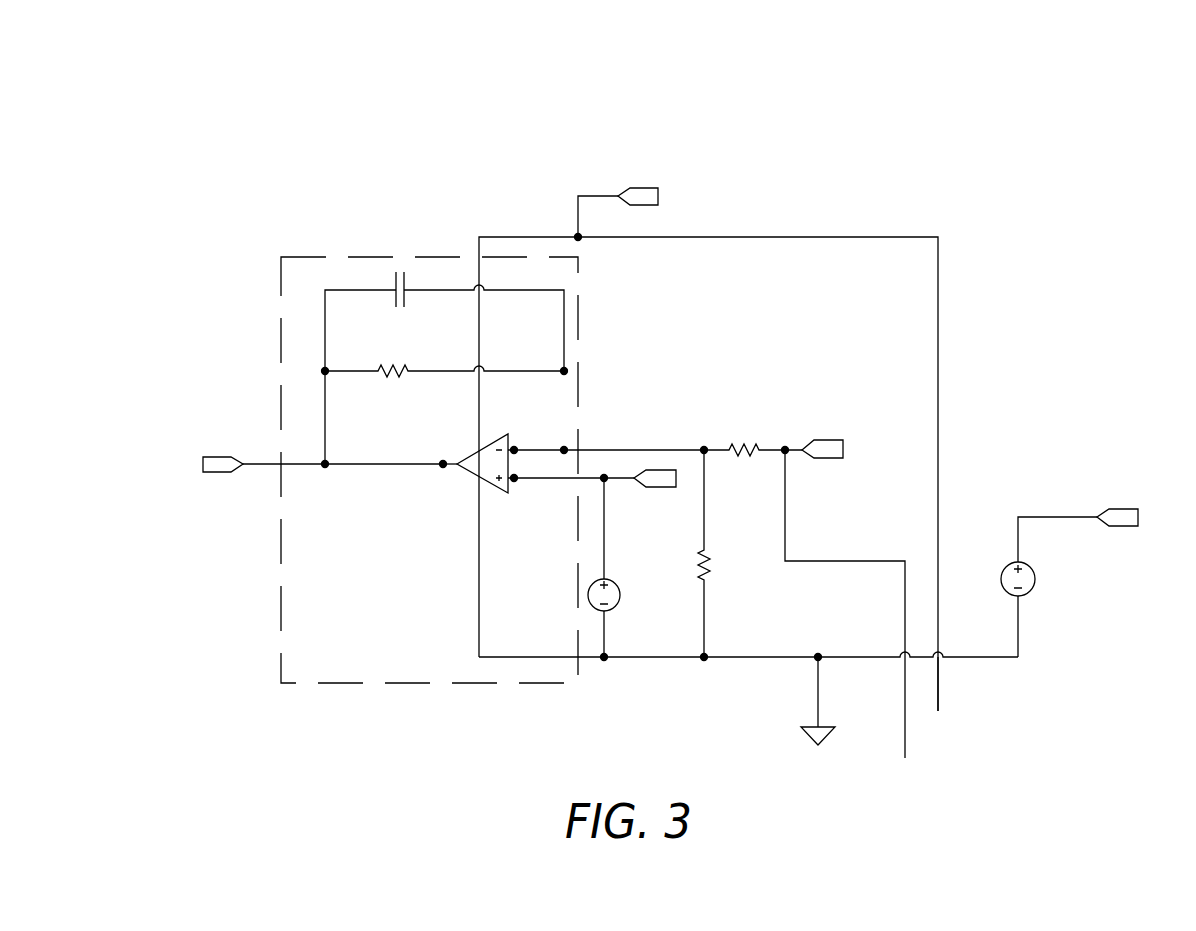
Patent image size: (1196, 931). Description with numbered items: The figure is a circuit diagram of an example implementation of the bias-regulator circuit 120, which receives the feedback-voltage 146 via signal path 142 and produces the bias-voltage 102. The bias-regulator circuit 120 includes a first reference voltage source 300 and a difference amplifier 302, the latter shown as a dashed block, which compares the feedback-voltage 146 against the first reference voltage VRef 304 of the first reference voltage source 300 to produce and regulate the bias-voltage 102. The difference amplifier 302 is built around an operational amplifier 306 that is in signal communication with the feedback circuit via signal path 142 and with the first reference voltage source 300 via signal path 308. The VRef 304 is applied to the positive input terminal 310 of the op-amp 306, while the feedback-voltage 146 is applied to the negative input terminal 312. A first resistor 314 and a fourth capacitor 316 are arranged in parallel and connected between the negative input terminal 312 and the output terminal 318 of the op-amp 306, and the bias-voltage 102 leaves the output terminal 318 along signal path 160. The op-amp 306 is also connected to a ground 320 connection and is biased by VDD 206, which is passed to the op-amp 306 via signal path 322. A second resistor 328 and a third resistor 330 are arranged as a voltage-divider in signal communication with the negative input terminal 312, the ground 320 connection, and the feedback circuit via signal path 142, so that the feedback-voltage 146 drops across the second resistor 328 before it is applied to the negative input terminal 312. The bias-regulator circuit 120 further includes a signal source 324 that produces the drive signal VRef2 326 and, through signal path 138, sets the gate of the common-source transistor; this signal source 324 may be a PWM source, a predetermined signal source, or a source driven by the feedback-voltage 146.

The bias-regulator circuit 120 is at (845, 80).
The VDD 206 is at (642, 200).
The difference amplifier 302 is at (429, 470).
The bias-voltage 102 is at (212, 460).
The signal path 160 is at (255, 466).
The fourth capacitor C4 316 is at (405, 300).
The first resistor R1 314 is at (385, 377).
The operational amplifier 306 is at (478, 462).
The output terminal 318 is at (446, 460).
The negative input terminal 312 is at (516, 448).
The positive input terminal 310 is at (516, 481).
The first reference voltage VRef 304 is at (655, 482).
The signal path 308 is at (605, 535).
The first reference voltage source 300 is at (620, 603).
The second resistor R2 328 is at (752, 452).
The feedback-voltage 146 is at (832, 449).
The third resistor R3 330 is at (710, 573).
The ground 320 is at (815, 737).
The signal path 142 is at (906, 737).
The signal path 322 is at (939, 675).
The signal path 138 is at (1060, 517).
The signal source 324 is at (1035, 581).
The drive signal VRef2 326 is at (1125, 520).